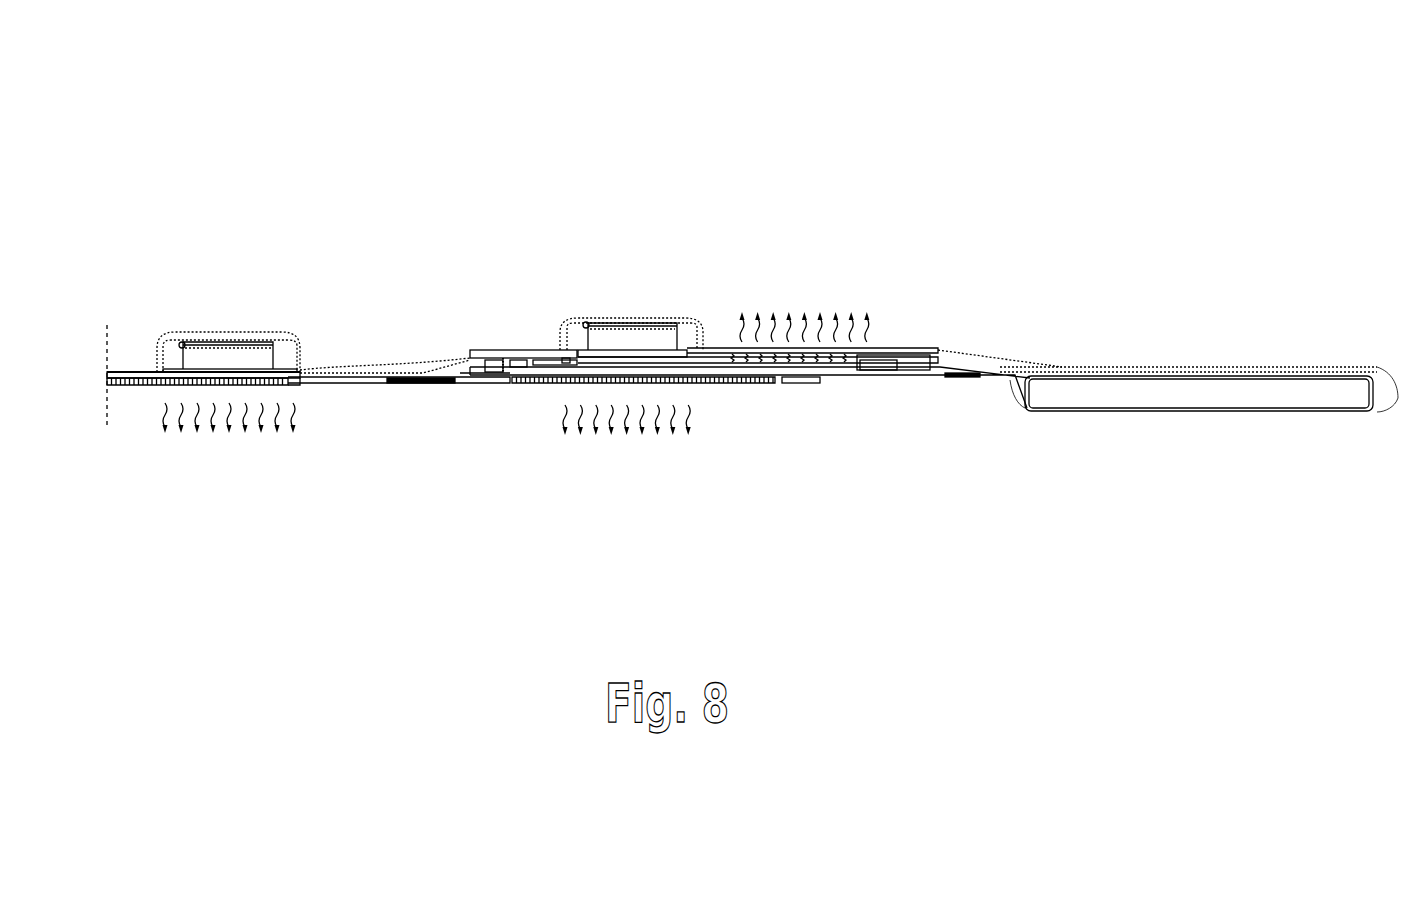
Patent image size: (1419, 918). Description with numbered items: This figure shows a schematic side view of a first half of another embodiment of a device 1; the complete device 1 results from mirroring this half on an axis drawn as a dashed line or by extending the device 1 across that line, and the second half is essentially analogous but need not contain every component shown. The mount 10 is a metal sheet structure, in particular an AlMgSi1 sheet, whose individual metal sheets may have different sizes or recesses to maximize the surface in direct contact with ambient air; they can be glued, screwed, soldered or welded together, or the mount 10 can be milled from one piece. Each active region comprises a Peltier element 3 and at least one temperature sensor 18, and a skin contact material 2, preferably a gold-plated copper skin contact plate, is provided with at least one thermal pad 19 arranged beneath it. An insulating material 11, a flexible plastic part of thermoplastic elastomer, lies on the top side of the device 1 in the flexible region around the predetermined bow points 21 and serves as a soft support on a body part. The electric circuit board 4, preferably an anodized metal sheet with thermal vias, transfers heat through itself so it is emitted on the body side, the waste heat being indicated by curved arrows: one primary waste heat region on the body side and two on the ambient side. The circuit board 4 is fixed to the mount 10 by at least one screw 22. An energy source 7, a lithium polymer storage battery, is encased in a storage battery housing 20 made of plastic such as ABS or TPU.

The device 1 is at (556, 185).
The skin contact material 2 is at (640, 317).
The Peltier element 3 is at (260, 357).
The electric circuit board 4 is at (895, 357).
The energy source 7 is at (1153, 383).
The mount 10 is at (120, 372).
The insulating material 11 is at (415, 370).
The temperature sensor 18 is at (182, 343).
The thermal pad 19 is at (585, 322).
The storage battery housing 20 is at (1245, 412).
The predetermined bow points 21 is at (422, 384).
The screw 22 is at (503, 358).